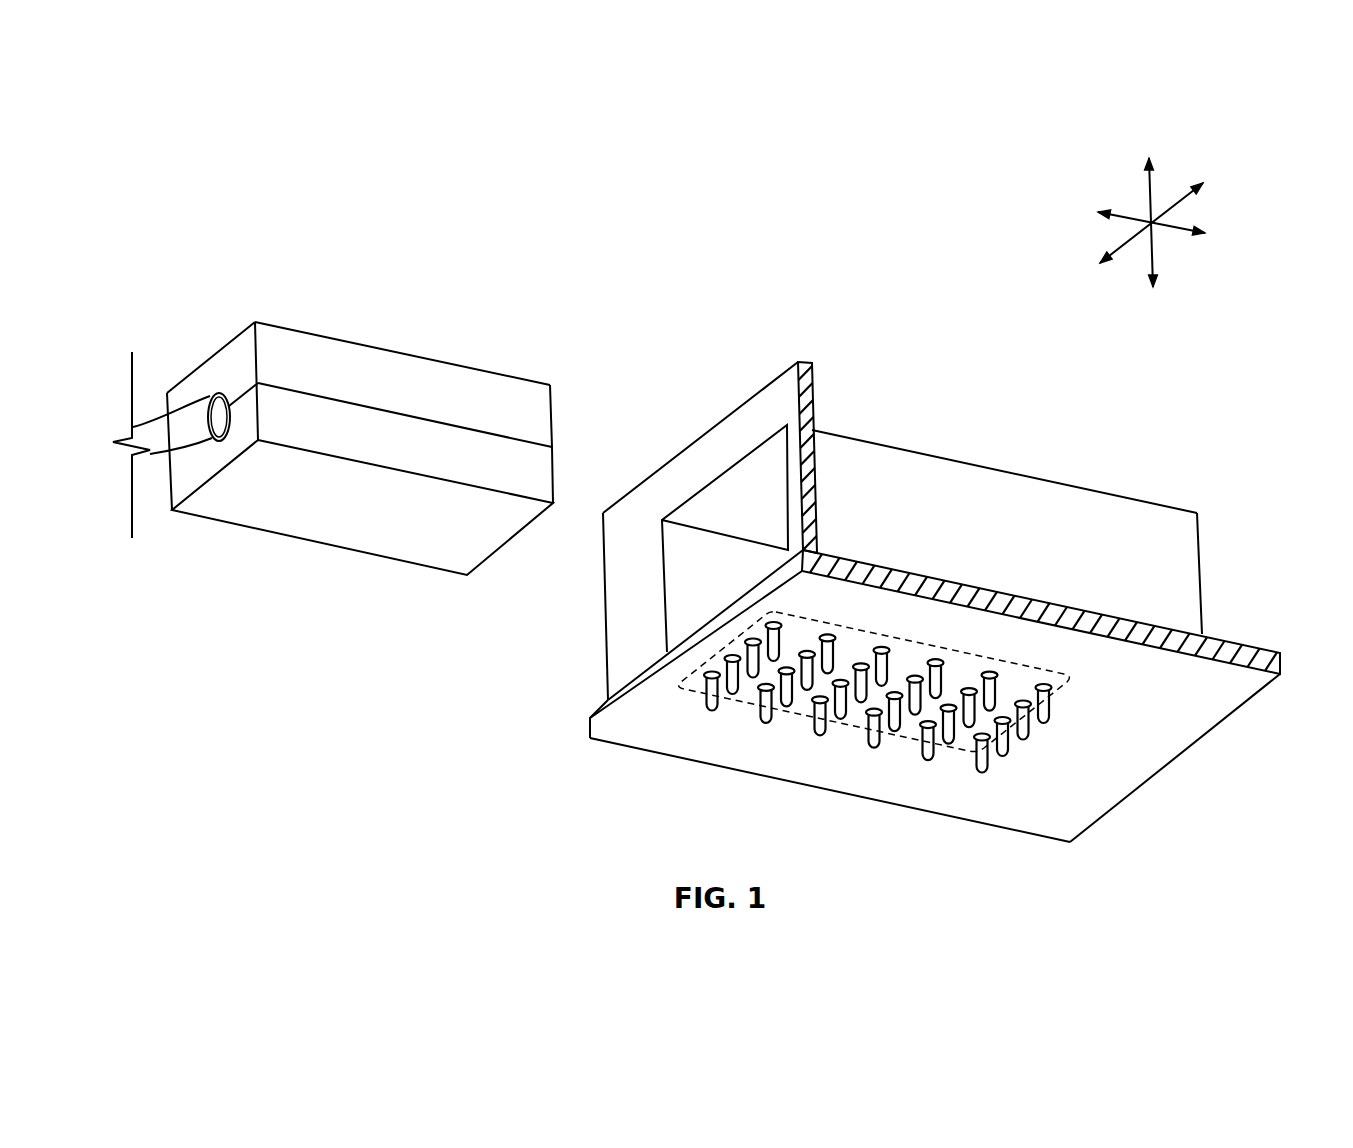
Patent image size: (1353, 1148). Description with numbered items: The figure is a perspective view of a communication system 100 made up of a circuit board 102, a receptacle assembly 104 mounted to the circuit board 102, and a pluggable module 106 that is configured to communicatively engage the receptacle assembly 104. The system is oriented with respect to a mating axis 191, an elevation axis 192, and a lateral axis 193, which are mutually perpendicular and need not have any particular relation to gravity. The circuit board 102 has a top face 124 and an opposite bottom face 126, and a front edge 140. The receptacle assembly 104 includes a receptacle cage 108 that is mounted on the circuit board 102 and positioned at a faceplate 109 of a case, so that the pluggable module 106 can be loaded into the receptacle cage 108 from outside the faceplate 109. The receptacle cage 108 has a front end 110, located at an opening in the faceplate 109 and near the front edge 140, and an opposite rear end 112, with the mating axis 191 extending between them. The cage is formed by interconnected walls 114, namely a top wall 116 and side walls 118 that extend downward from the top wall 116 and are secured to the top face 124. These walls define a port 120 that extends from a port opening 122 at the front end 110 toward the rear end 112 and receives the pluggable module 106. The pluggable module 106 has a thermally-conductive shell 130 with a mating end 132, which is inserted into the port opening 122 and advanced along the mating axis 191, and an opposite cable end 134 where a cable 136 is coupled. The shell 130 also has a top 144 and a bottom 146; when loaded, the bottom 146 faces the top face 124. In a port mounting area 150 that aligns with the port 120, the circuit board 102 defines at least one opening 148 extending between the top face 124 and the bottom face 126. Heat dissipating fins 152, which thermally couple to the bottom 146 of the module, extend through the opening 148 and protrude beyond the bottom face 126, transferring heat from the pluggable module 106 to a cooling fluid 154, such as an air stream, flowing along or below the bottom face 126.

The communication system 100 is at (578, 198).
The circuit board 102 is at (1250, 647).
The receptacle assembly 104 is at (1165, 430).
The pluggable module connector 106 is at (392, 335).
The receptacle cage 108 is at (920, 452).
The faceplate 109 is at (740, 418).
The front end 110 is at (663, 545).
The rear end 112 is at (1202, 537).
The walls 114 is at (718, 497).
The top wall 116 is at (762, 503).
The side walls 118 is at (683, 607).
The port 120 is at (723, 550).
The port opening 122 is at (660, 580).
The top face 124 is at (600, 707).
The bottom face 126 is at (625, 737).
The shell 130 is at (458, 364).
The mating end 132 is at (552, 413).
The cable end 134 is at (208, 370).
The cable 136 is at (163, 450).
The front edge 140 is at (635, 690).
The top 144 is at (273, 326).
The bottom 146 is at (318, 505).
The opening 148 is at (753, 693).
The port mounting area 150 is at (740, 700).
The heat dissipating fins 152 is at (771, 721).
The cooling fluid 154 is at (1030, 795).
The mating axis 191 is at (1173, 230).
The elevation axis 192 is at (1152, 192).
The lateral axis 193 is at (1127, 245).